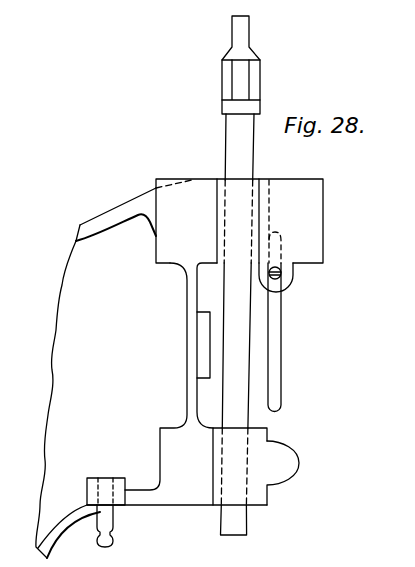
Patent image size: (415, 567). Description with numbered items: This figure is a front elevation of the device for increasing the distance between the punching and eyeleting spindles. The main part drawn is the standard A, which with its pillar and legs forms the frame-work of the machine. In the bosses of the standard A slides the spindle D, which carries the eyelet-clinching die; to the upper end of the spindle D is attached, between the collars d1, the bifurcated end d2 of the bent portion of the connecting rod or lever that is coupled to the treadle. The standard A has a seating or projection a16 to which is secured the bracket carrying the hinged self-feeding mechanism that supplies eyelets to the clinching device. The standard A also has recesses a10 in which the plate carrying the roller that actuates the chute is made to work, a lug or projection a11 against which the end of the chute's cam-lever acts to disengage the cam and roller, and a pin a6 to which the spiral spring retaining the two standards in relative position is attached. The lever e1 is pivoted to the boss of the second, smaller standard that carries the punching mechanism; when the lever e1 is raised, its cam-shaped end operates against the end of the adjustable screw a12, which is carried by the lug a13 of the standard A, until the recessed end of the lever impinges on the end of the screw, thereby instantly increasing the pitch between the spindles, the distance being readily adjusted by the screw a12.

The standard A is at (126, 369).
The pin a6 is at (114, 523).
The recesses a10 is at (258, 181).
The lug or projection a11 is at (203, 362).
The adjustable screw a12 is at (282, 273).
The lug a13 is at (287, 288).
The seating or projection a16 is at (239, 221).
The spindle D is at (227, 144).
The collars d1 is at (253, 53).
The bifurcated end d2 is at (262, 80).
The lever e1 is at (279, 347).